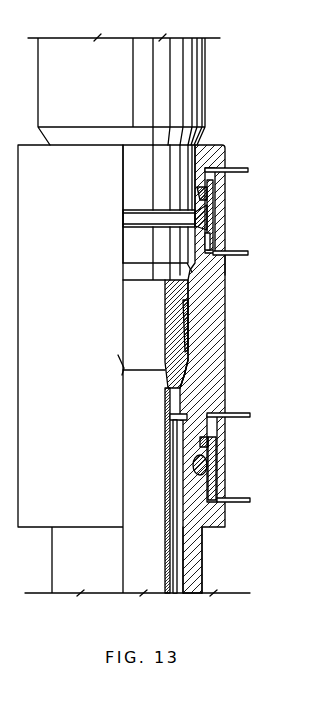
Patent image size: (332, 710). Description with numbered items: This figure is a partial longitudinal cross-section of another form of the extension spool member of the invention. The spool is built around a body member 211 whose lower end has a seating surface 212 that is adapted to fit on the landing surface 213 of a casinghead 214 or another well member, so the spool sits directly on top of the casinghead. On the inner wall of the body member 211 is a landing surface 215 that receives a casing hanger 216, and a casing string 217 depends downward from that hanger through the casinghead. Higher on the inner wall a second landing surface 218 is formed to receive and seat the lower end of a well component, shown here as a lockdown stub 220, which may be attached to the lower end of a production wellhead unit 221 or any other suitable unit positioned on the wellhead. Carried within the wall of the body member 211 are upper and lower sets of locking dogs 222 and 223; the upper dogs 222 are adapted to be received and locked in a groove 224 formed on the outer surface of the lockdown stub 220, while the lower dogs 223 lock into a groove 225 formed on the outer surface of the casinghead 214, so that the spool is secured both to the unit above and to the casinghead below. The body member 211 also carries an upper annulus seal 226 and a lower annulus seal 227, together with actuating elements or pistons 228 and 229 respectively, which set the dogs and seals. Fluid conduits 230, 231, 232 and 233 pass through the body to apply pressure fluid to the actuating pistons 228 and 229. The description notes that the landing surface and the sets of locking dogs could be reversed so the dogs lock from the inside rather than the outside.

The body member 211 is at (215, 350).
The seating surface 212 is at (176, 414).
The landing surface 213 is at (186, 418).
The casinghead 214 is at (197, 566).
The landing surface 215 is at (181, 388).
The casing hanger 216 is at (168, 317).
The casing string 217 is at (166, 503).
The second landing surface 218 is at (183, 262).
The lockdown stub 220 is at (132, 180).
The production wellhead unit 221 is at (85, 83).
The upper set of locking dogs 222 is at (212, 226).
The lower set of locking dogs 223 is at (212, 470).
The groove 224 is at (140, 218).
The groove 225 is at (194, 465).
The upper annulus seal 226 is at (207, 196).
The lower annulus seal 227 is at (216, 452).
The actuating piston 228 is at (224, 252).
The actuating piston 229 is at (208, 441).
The fluid conduit 230 is at (237, 168).
The fluid conduit 231 is at (237, 258).
The fluid conduit 232 is at (238, 413).
The fluid conduit 233 is at (238, 502).